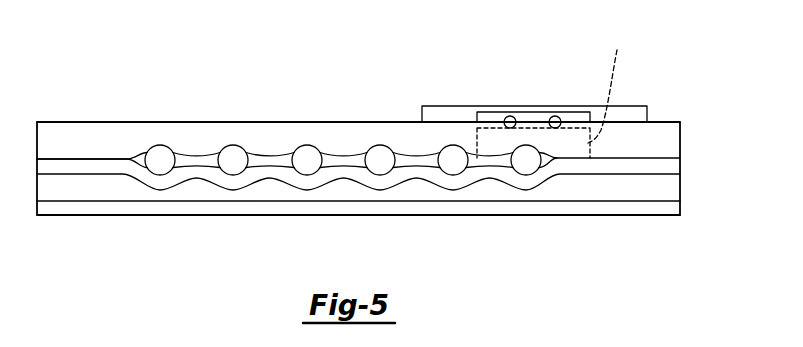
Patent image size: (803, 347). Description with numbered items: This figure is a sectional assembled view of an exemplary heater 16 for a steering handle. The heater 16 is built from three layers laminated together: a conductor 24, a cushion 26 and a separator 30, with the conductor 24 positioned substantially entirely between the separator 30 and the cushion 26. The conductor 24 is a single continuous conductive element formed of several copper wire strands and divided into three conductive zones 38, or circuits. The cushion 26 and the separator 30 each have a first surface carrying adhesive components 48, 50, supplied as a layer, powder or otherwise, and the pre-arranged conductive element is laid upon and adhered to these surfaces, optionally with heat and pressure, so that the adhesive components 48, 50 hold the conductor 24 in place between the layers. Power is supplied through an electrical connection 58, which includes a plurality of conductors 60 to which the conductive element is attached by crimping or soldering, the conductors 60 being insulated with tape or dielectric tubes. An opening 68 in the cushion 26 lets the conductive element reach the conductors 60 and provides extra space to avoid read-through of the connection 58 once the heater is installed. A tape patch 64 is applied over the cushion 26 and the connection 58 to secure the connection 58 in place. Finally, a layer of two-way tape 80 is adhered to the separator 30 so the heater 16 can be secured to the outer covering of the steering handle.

The heater 16 is at (692, 188).
The conductor 24 is at (453, 158).
The cushion 26 is at (660, 125).
The separator 30 is at (618, 190).
The conductive zones 38 is at (163, 156).
The adhesive component 48 is at (358, 182).
The adhesive component 50 is at (677, 165).
The electrical connection 58 is at (578, 110).
The conductors 60 is at (510, 116).
The patch 64 is at (442, 112).
The opening 68 is at (611, 87).
The two-way tape 80 is at (78, 215).